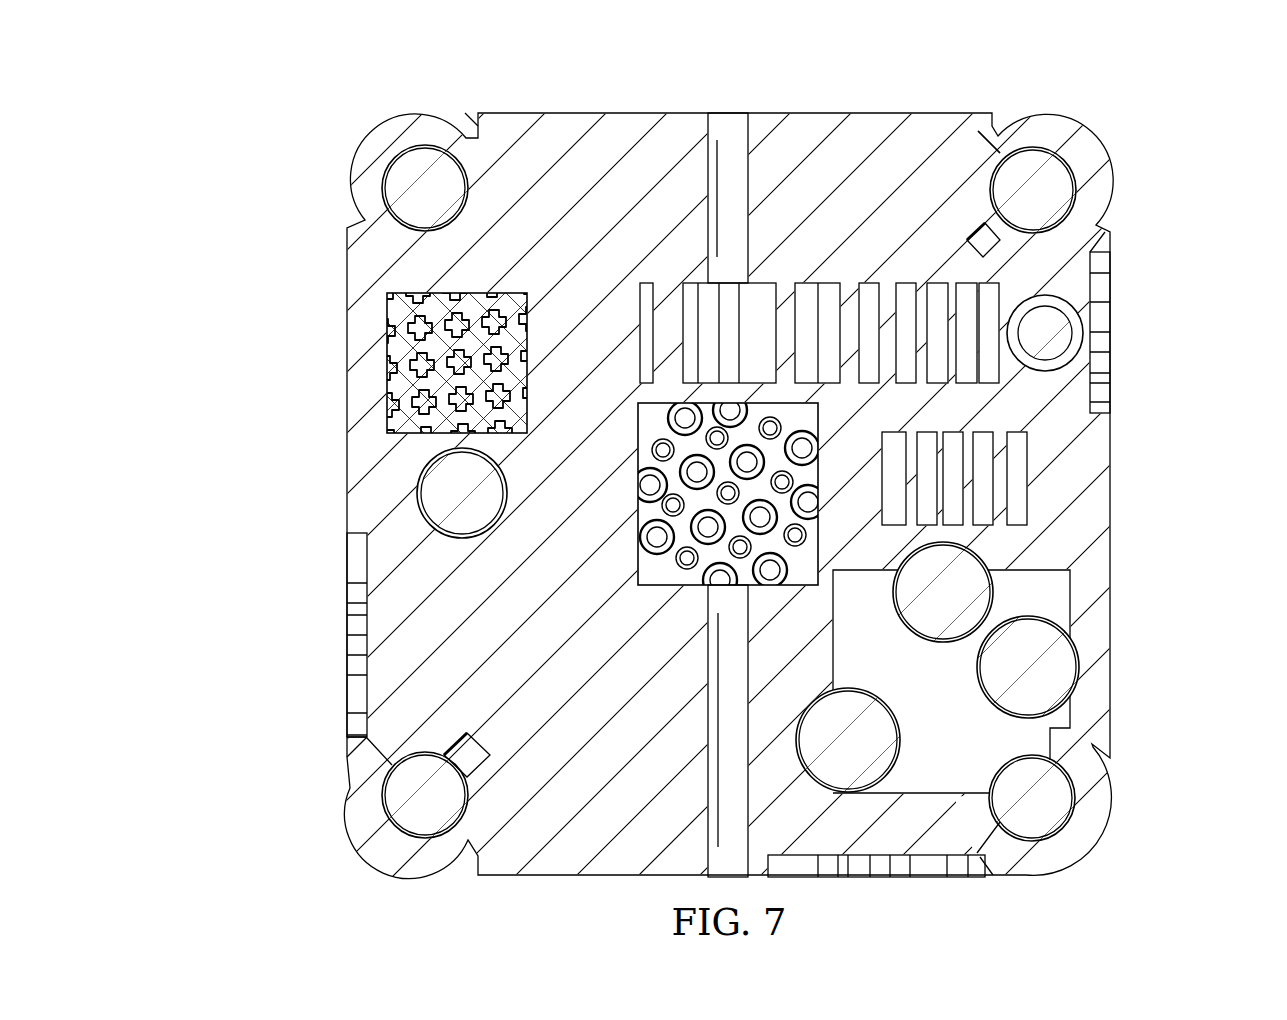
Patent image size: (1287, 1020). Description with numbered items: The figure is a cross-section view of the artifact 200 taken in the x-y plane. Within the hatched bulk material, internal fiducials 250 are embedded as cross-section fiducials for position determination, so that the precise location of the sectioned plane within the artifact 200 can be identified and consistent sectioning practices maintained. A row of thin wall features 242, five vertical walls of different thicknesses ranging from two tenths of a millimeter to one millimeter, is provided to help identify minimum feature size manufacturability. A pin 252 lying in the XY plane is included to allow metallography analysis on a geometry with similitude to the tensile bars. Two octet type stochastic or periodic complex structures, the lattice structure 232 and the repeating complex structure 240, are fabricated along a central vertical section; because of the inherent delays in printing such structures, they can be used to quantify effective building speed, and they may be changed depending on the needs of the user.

The artifact 200 is at (1113, 73).
The fiducials 250 is at (1003, 90).
The thin wall features 242 is at (860, 325).
The pin in the XY plane 252 is at (1077, 345).
The octet type stochastic or periodic complex structure 232 is at (423, 346).
The stochastic or periodic structure 240 is at (640, 521).